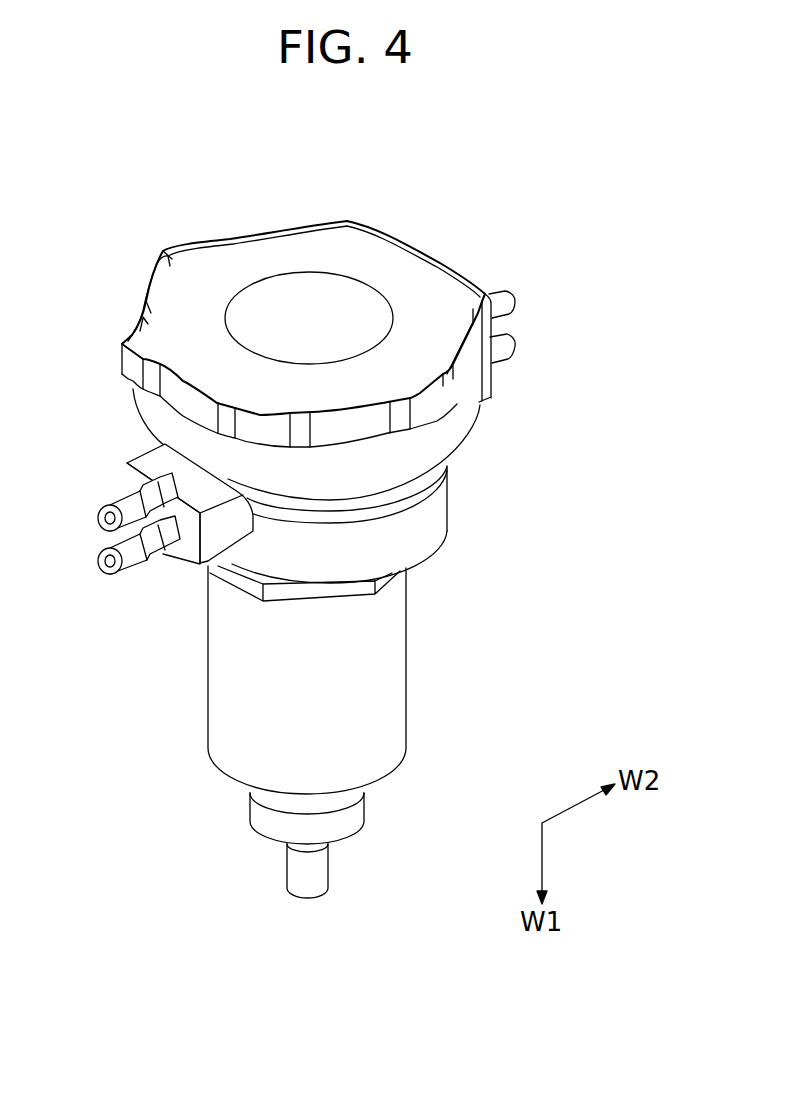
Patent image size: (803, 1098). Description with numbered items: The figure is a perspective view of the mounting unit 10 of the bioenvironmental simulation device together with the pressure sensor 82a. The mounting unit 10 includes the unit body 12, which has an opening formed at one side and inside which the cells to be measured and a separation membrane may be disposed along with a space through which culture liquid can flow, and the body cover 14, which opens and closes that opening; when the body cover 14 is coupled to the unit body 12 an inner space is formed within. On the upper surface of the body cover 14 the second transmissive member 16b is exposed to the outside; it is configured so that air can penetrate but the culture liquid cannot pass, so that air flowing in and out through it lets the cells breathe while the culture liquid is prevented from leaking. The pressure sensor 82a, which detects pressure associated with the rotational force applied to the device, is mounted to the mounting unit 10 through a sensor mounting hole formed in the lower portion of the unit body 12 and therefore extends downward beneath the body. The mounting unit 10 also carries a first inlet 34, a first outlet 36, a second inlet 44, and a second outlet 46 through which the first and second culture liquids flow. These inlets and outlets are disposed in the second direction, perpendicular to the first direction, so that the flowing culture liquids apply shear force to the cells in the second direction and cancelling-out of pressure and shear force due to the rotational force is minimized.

The mounting unit 10 is at (148, 282).
The unit body 12 is at (445, 442).
The body cover 14 is at (427, 275).
The second transmissive member 16b is at (315, 290).
The first inlet 34 is at (118, 503).
The first outlet 36 is at (505, 304).
The second inlet 44 is at (129, 563).
The second outlet 46 is at (503, 352).
The pressure sensor 82a is at (393, 672).